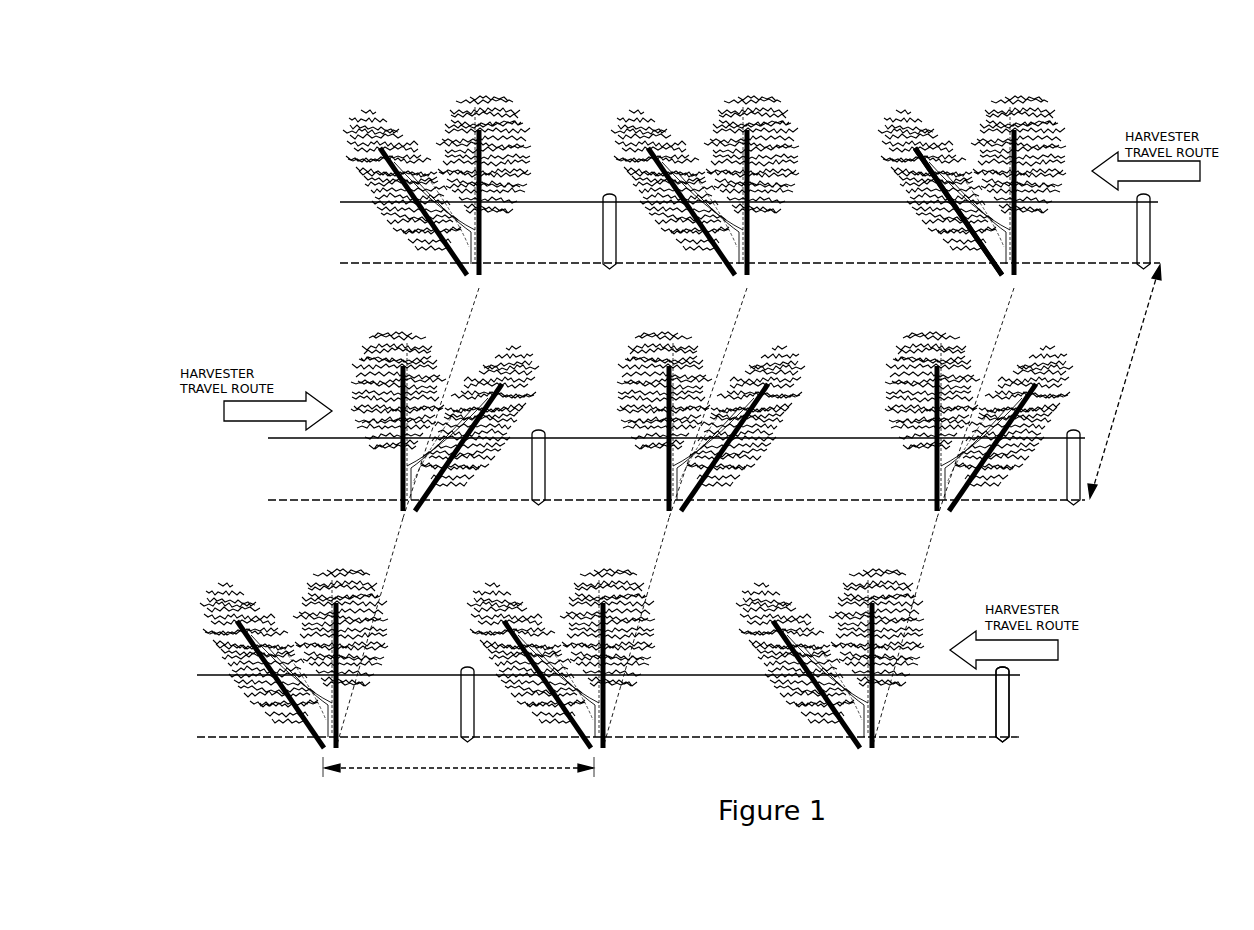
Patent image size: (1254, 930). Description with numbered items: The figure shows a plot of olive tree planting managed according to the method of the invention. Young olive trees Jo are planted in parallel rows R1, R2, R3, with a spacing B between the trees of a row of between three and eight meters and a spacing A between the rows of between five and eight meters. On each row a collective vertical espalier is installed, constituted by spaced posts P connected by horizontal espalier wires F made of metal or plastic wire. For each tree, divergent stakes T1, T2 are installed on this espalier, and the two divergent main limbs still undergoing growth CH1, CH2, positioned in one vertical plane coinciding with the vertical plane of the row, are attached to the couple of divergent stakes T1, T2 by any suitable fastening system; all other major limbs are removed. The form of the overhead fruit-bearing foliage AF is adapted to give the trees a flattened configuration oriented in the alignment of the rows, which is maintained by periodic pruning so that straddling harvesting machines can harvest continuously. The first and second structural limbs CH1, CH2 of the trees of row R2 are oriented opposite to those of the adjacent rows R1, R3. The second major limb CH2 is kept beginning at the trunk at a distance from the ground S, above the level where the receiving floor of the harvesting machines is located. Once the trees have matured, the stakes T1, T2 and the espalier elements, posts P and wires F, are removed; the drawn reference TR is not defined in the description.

The horizontal espalier wire F is at (345, 200).
The young olive tree Jo is at (790, 118).
The overhead fruit-bearing foliage AF is at (922, 112).
The first structural limb CH1 is at (1017, 120).
The second structural limb CH2 is at (970, 207).
The first divergent stake T1 is at (1015, 228).
The second divergent stake T2 is at (975, 243).
The trellis tie TR is at (1008, 243).
The first row R1 is at (750, 252).
The second row R2 is at (676, 469).
The third row R3 is at (609, 706).
The post P is at (610, 222).
The spacing between rows A is at (1124, 381).
The spacing between trees B is at (458, 779).
The ground S is at (980, 771).